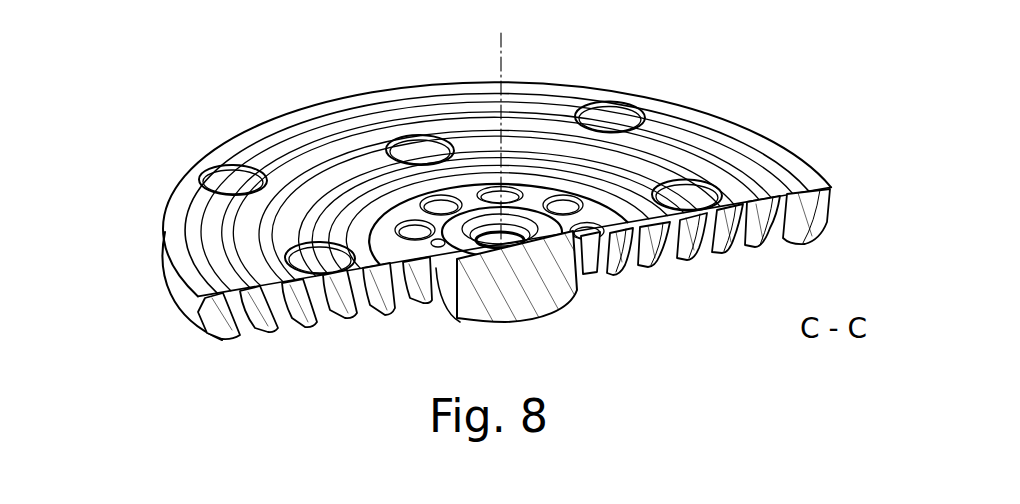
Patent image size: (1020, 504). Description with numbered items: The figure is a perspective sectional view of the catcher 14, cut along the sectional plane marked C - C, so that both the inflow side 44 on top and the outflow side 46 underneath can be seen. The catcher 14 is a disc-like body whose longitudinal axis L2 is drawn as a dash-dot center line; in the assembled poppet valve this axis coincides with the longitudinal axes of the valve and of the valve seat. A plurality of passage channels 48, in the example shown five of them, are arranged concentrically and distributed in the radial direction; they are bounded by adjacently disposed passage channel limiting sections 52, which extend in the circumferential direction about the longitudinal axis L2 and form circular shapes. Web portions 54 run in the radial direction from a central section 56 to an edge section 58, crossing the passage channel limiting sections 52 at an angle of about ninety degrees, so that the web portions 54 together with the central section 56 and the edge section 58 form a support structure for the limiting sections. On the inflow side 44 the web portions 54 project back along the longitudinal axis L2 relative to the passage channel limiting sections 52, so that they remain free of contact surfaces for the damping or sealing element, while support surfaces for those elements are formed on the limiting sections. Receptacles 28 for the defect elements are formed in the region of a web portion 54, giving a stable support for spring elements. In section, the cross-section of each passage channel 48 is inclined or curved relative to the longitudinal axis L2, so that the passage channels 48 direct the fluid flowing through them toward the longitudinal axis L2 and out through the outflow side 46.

The catcher 14 is at (712, 70).
The inflow side 44 is at (306, 94).
The passage channels 48 is at (358, 230).
The passage channel limiting sections 52 is at (613, 165).
The receptacles 28 is at (226, 182).
The longitudinal axis L2 is at (504, 34).
The central section 56 is at (421, 246).
The edge section 58 is at (240, 330).
The outflow side 46 is at (320, 366).
The web portions 54 is at (800, 178).